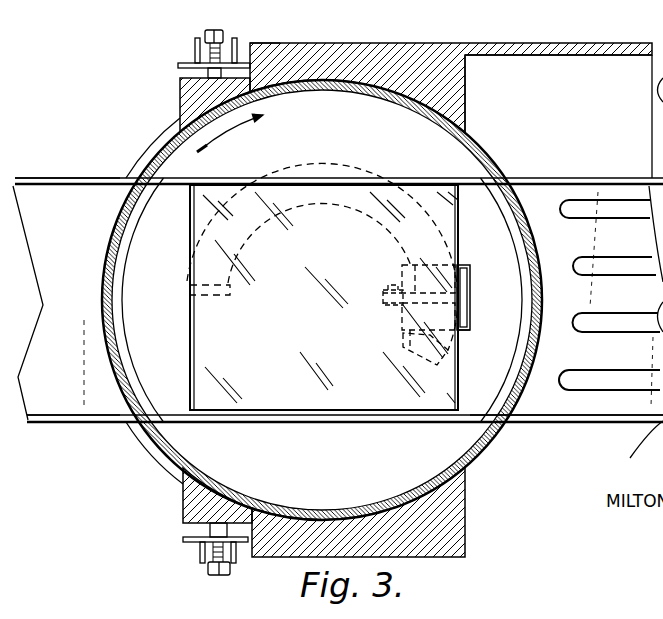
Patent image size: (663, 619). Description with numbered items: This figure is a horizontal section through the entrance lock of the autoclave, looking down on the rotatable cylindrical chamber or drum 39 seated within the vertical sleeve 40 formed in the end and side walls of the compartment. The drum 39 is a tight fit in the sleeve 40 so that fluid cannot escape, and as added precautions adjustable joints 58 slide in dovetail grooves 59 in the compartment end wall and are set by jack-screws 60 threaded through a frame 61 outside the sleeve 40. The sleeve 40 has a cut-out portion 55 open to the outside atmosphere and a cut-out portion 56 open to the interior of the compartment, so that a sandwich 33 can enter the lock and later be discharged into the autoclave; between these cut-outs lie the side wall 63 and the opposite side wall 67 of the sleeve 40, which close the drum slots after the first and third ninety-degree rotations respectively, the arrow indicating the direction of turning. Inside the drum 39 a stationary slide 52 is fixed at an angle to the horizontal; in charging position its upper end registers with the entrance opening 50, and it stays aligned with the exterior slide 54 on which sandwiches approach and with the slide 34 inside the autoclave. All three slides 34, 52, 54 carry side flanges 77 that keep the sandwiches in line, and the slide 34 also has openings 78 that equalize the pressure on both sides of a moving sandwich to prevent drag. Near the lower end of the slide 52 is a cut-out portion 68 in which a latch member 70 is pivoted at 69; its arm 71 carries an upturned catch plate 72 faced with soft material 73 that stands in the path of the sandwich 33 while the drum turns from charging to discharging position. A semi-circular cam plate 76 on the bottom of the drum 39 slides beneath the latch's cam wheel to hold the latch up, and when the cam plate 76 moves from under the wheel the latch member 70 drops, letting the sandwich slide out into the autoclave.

The sandwich 33 is at (375, 402).
The slide 34 is at (540, 426).
The cylindrical chamber or drum 39 is at (490, 160).
The vertical sleeve 40 is at (340, 44).
The entrance opening 50 is at (121, 238).
The stationary slide 52 is at (190, 422).
The slide 54 is at (73, 187).
The cut-out portion 55 is at (170, 475).
The cut-out portion 56 is at (466, 108).
The adjustable joint 58 is at (195, 92).
The dovetail groove 59 is at (267, 43).
The jack-screw 60 is at (213, 30).
The frame 61 is at (205, 56).
The side wall 63 is at (333, 97).
The opposite side wall 67 is at (346, 510).
The cut-out portion 68 is at (403, 322).
The pivot 69 is at (388, 296).
The latch member 70 is at (430, 288).
The arm 71 is at (422, 308).
The catch plate 72 is at (468, 274).
The soft facing material 73 is at (468, 323).
The cam plate 76 is at (270, 222).
The side flange 77 is at (90, 426).
The opening 78 is at (627, 321).